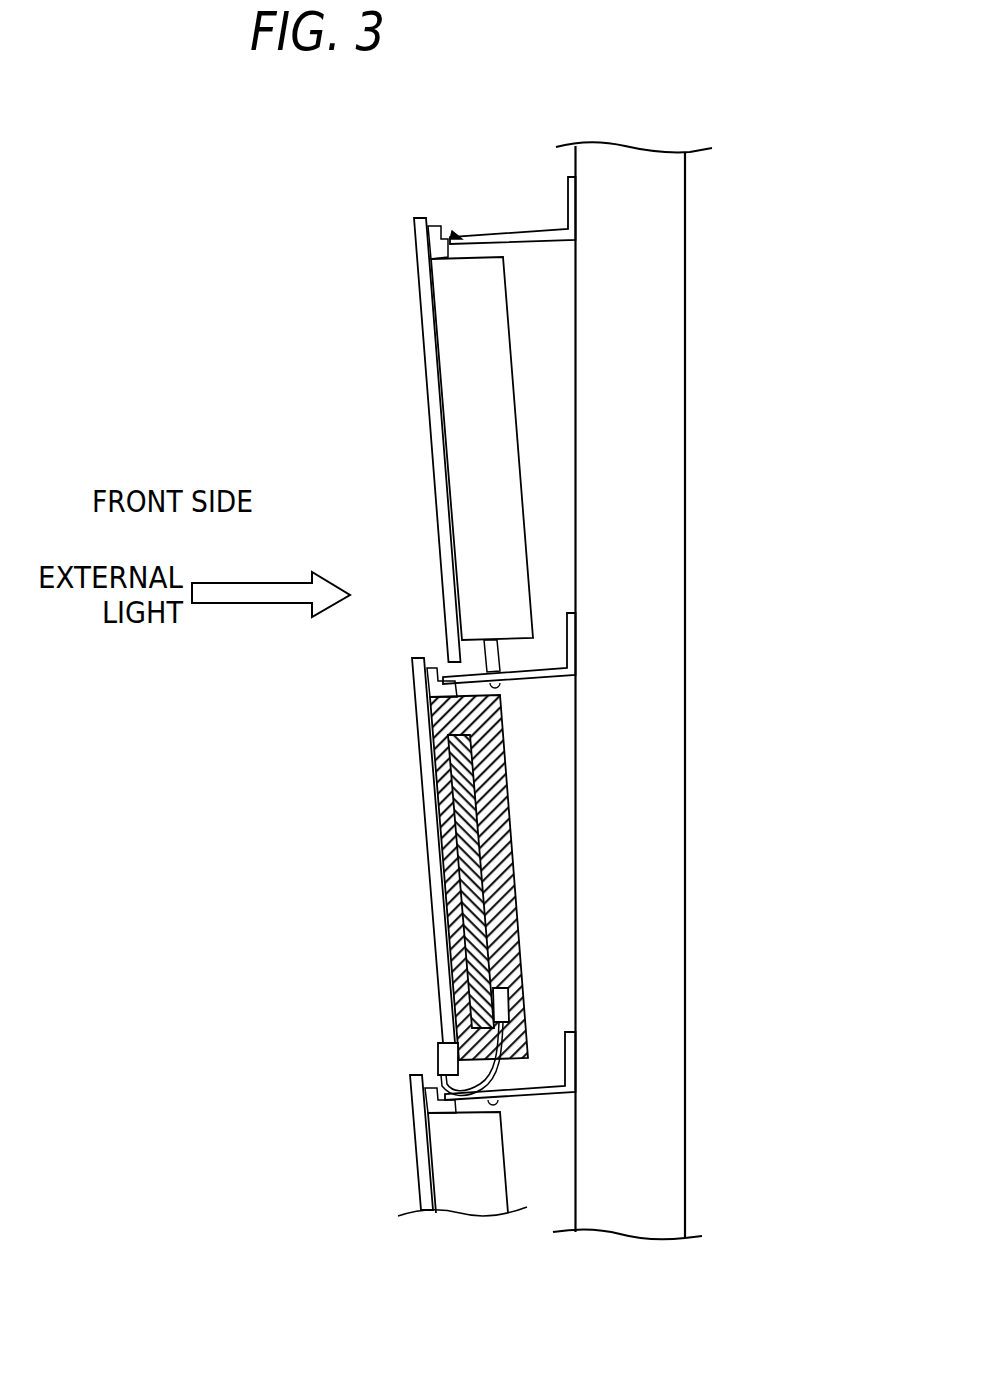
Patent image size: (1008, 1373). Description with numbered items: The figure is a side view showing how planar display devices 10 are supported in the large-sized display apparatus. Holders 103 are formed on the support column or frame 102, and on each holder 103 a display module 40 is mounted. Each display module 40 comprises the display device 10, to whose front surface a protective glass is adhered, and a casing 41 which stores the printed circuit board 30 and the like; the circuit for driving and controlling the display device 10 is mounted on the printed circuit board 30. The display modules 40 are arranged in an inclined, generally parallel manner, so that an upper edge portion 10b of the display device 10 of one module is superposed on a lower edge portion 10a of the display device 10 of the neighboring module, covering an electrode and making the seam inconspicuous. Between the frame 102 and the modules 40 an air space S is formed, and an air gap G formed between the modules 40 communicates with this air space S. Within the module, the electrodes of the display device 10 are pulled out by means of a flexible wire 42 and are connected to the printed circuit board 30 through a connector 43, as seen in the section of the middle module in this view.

The display device 10 is at (438, 438).
The lower edge portion 10a is at (455, 653).
The upper edge portion 10b is at (423, 661).
The printed circuit board 30 is at (472, 937).
The display module 40 is at (450, 357).
The casing 41 is at (497, 835).
The flexible wire 42 is at (440, 1076).
The connector 43 is at (510, 1003).
The frame 102 is at (686, 522).
The holder 103 is at (543, 688).
The air space S is at (560, 433).
The air gap G is at (512, 652).